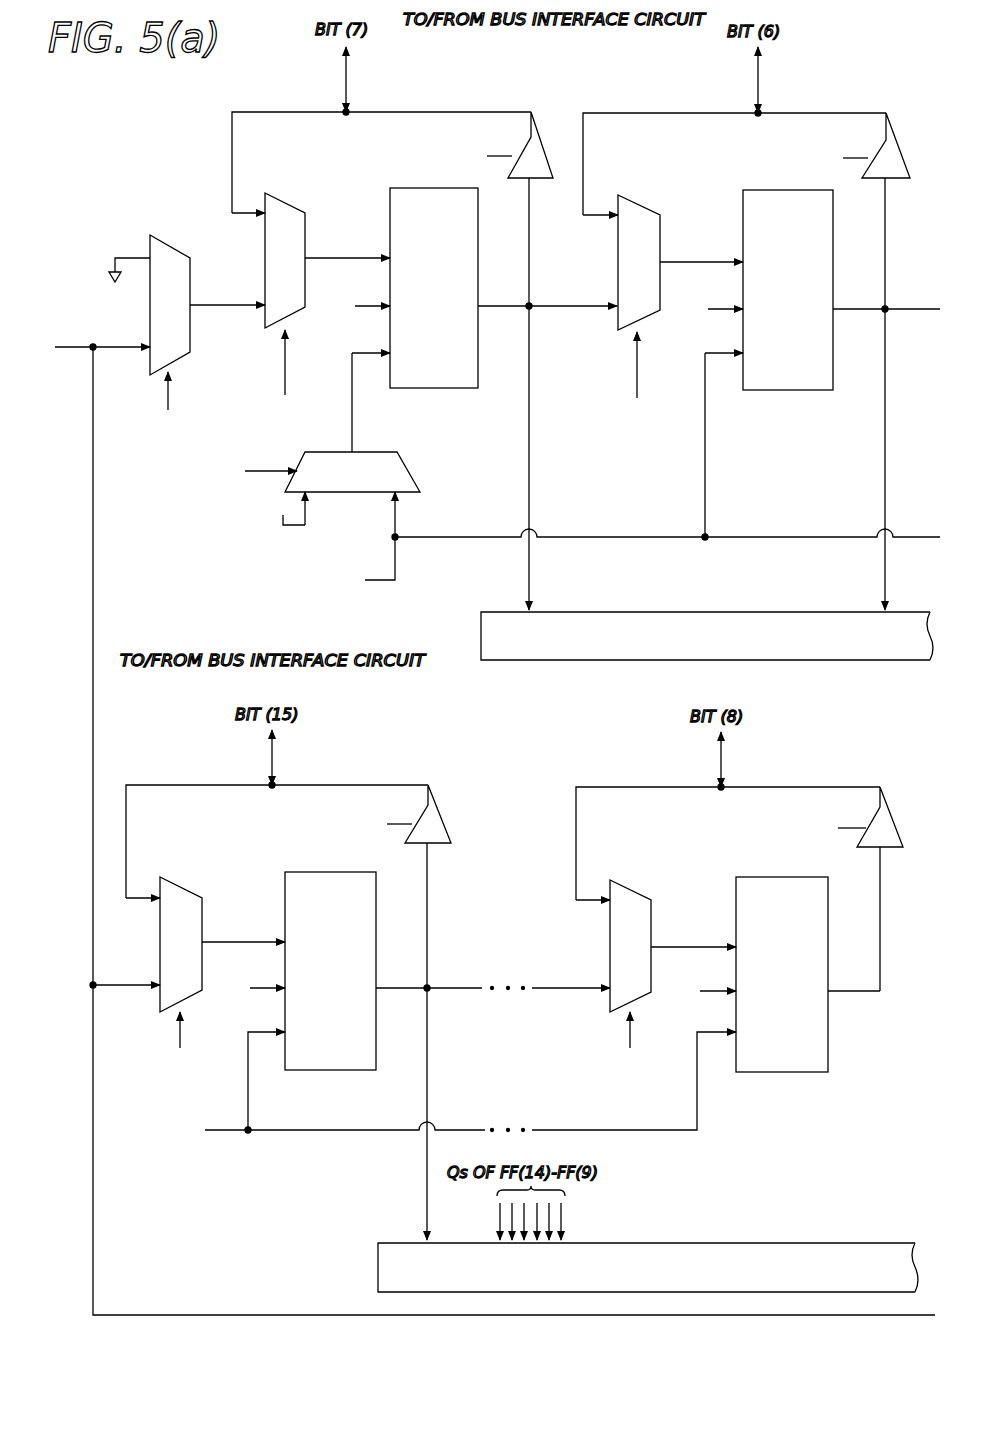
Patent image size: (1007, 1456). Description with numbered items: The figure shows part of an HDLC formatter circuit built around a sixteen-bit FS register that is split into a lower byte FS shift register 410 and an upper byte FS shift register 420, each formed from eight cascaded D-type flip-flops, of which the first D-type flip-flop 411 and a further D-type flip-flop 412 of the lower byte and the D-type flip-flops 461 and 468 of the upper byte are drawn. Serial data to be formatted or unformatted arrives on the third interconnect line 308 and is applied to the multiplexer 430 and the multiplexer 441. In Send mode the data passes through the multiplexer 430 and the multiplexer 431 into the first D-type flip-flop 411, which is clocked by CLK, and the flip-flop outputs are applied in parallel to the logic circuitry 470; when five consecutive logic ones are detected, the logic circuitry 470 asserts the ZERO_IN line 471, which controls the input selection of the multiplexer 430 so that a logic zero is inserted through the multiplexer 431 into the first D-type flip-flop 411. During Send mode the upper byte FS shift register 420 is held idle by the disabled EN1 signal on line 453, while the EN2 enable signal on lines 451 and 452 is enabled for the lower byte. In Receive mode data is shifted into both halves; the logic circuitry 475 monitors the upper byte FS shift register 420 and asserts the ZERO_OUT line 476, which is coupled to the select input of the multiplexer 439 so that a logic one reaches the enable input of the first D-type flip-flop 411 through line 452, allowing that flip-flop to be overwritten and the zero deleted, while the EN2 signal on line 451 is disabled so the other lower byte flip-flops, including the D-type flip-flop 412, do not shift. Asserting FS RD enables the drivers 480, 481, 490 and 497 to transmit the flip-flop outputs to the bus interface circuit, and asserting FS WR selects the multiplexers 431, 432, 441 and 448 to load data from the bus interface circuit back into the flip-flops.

The third interconnect line 308 is at (69, 344).
The lower byte FS shift register 410 is at (548, 110).
The first D-type flip-flop 411 is at (410, 188).
The D-type flip-flop 412 is at (787, 393).
The upper byte FS shift register 420 is at (908, 765).
The multiplexer 430 is at (163, 236).
The multiplexer 431 is at (281, 208).
The multiplexer 432 is at (642, 207).
The multiplexer 439 is at (412, 468).
The multiplexer 441 is at (185, 890).
The multiplexer 448 is at (641, 895).
The line 451 is at (470, 533).
The line 452 is at (352, 427).
The line 453 is at (315, 1135).
The D-type flip-flop 461 is at (333, 1073).
The D-type flip-flop 468 is at (793, 1075).
The logic circuitry 470 is at (618, 608).
The ZERO_IN line 471 is at (170, 397).
The logic circuitry 475 is at (686, 1240).
The ZERO_OUT line 476 is at (266, 470).
The driver 480 is at (541, 180).
The driver 481 is at (900, 180).
The driver 490 is at (441, 847).
The driver 497 is at (893, 850).